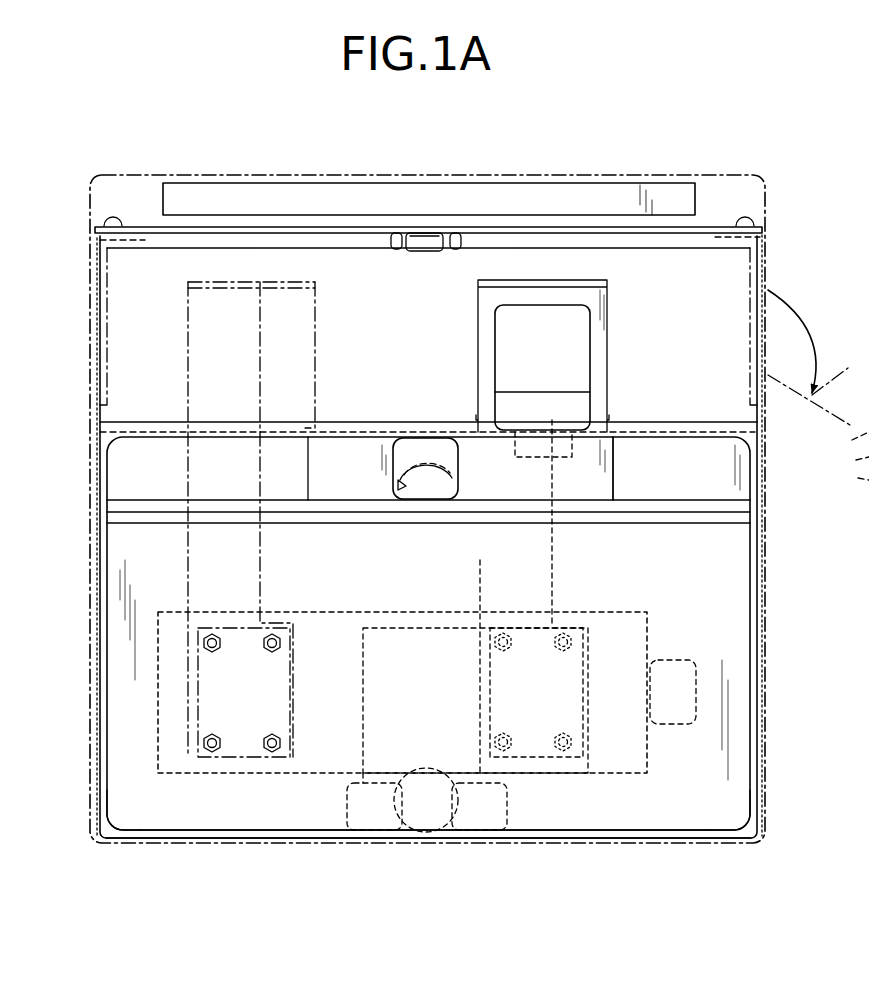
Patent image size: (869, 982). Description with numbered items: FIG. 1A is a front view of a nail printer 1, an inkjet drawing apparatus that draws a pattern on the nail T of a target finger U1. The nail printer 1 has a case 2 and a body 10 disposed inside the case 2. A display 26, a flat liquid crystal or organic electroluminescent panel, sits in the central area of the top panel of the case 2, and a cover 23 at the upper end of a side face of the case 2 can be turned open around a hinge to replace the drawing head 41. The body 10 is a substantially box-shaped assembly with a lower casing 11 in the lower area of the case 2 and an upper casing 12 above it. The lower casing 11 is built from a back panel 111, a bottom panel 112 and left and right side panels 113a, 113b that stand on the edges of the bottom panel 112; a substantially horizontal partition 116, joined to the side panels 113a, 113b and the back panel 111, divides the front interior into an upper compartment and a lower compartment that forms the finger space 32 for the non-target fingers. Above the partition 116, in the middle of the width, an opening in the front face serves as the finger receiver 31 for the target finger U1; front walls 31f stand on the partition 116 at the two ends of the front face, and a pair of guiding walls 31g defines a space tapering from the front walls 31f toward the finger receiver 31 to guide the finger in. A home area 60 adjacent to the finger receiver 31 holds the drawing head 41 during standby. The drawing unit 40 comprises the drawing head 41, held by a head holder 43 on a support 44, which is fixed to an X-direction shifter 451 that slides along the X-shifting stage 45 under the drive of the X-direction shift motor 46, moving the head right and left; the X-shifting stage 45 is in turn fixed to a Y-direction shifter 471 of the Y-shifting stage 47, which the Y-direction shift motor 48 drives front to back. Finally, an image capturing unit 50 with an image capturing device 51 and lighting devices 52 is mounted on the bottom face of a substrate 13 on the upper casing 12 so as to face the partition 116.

The nail printer 1 is at (706, 134).
The case 2 is at (228, 172).
The body 10 is at (762, 712).
The lower casing 11 is at (760, 675).
The upper casing 12 is at (106, 356).
The substrate 13 is at (246, 222).
The cover 23 is at (818, 385).
The display 26 is at (310, 188).
The finger receiver 31 is at (399, 493).
The front walls 31f is at (641, 487).
The guiding walls 31g is at (584, 485).
The finger space 32 is at (752, 618).
The drawing unit 40 is at (634, 790).
The drawing head 41 is at (562, 302).
The head holder 43 is at (607, 268).
The support 44 is at (555, 600).
The X-shifting stage 45 is at (316, 628).
The X-direction shift motor 46 is at (667, 660).
The Y-shifting stage 47 is at (388, 825).
The Y-direction shift motor 48 is at (456, 832).
The image capturing unit 50 is at (421, 228).
The image capturing device 51 is at (430, 242).
The lighting devices 52 is at (393, 236).
The home area 60 is at (531, 466).
The back panel 111 is at (251, 812).
The bottom panel 112 is at (316, 840).
The left side panel 113a is at (108, 775).
The right side panel 113b is at (755, 790).
The partition 116 is at (744, 506).
The X-direction shifter 451 is at (565, 758).
The Y-direction shifter 471 is at (492, 760).
The nail T is at (437, 456).
The target finger U1 is at (446, 487).